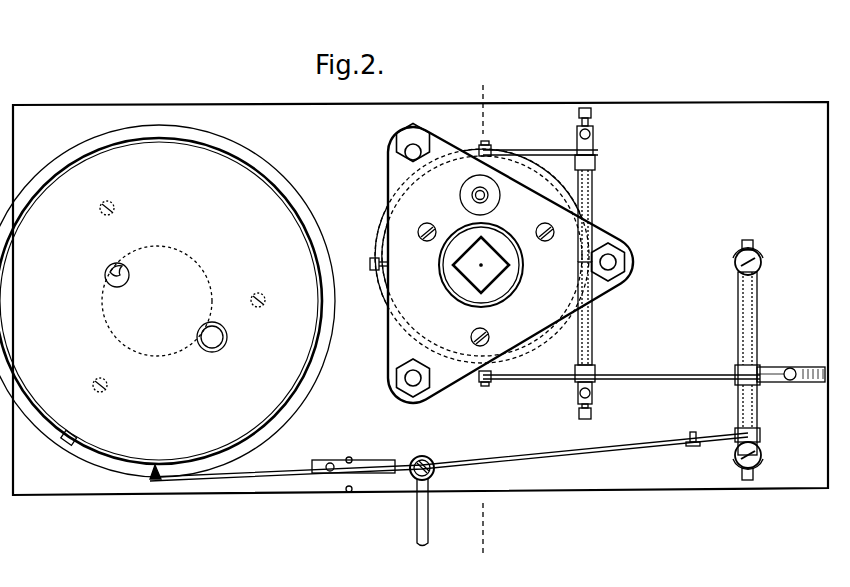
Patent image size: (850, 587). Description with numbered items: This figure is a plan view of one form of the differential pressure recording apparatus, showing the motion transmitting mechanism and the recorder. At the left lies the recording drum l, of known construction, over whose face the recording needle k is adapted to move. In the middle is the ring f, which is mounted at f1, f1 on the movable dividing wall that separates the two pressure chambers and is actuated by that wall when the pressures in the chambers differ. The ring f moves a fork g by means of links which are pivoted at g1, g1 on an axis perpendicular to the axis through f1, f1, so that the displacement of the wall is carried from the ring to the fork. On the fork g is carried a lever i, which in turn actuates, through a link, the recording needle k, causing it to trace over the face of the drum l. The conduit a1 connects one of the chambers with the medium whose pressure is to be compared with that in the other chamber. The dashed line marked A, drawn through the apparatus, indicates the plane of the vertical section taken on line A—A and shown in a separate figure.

The recording drum l is at (270, 179).
The recording needle k is at (157, 481).
The conduit a1 is at (488, 199).
The ring f is at (386, 228).
The mounting of ring f1 is at (605, 226).
The fork g is at (540, 152).
The pivot of links g1 is at (488, 147).
The lever i is at (660, 374).
The section line A— A is at (492, 321).